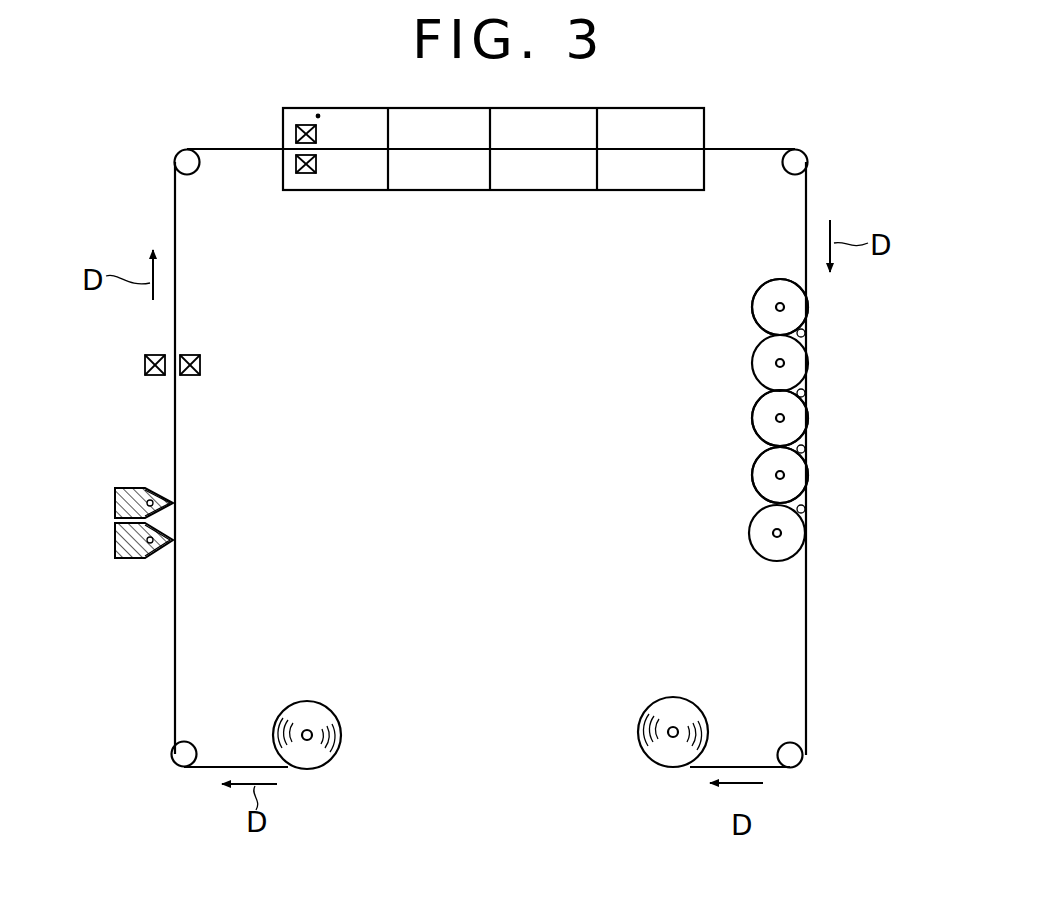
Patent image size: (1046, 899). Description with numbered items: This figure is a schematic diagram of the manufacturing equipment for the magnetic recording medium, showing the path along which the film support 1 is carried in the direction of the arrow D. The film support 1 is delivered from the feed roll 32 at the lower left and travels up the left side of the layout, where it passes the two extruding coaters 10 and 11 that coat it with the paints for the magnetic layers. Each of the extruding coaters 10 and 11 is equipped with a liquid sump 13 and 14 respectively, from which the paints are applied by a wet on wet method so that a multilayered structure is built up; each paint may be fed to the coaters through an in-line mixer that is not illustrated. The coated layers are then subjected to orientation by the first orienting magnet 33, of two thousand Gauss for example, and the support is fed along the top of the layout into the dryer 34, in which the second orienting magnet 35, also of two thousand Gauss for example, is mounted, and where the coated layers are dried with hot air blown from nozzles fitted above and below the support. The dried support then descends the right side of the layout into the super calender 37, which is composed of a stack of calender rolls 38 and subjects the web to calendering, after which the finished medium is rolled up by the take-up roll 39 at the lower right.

The film support 1 is at (176, 683).
The extruding coater 10 is at (114, 543).
The extruding coater 11 is at (114, 505).
The liquid sump 13 is at (145, 560).
The liquid sump 14 is at (148, 490).
The feed roll 32 is at (312, 730).
The first orienting magnet 33 is at (203, 365).
The dryer 34 is at (450, 200).
The second orienting magnet 35 is at (305, 175).
The super calender 37 is at (742, 370).
The calender rolls 38 is at (768, 300).
The take-up roll 39 is at (668, 725).